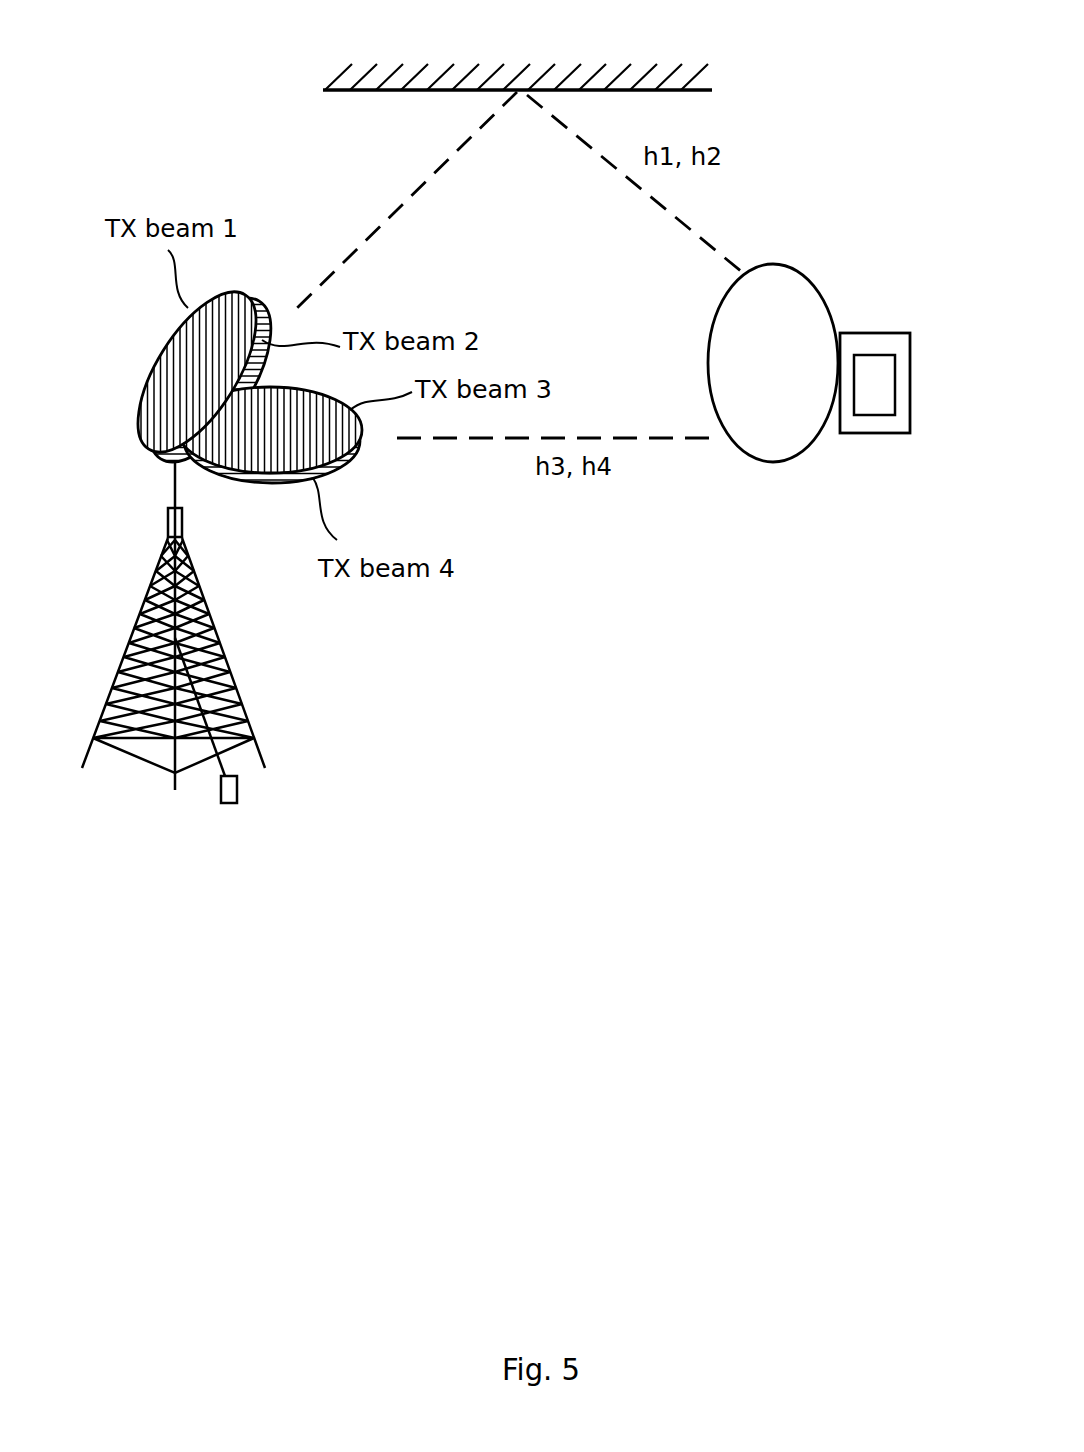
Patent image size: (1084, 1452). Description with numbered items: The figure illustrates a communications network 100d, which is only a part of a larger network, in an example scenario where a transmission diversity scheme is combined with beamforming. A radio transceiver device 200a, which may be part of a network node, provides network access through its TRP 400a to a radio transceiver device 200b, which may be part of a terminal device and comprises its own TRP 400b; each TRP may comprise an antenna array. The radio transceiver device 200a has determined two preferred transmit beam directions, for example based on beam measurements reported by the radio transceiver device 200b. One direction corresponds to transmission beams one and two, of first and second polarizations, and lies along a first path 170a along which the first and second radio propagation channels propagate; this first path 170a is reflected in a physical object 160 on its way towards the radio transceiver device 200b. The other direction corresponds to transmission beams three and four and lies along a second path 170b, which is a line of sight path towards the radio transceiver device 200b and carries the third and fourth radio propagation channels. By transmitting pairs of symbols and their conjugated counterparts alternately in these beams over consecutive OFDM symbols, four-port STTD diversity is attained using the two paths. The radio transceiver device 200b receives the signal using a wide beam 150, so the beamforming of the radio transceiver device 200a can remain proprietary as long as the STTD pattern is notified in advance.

The communications network 100d is at (836, 64).
The physical object 160 is at (342, 92).
The first path 170a is at (406, 196).
The second path 170b is at (425, 440).
The wide beam 150 is at (745, 415).
The TRP 400a is at (172, 482).
The TRP 400b is at (872, 355).
The radio transceiver device 200a is at (238, 784).
The radio transceiver device 200b is at (877, 433).